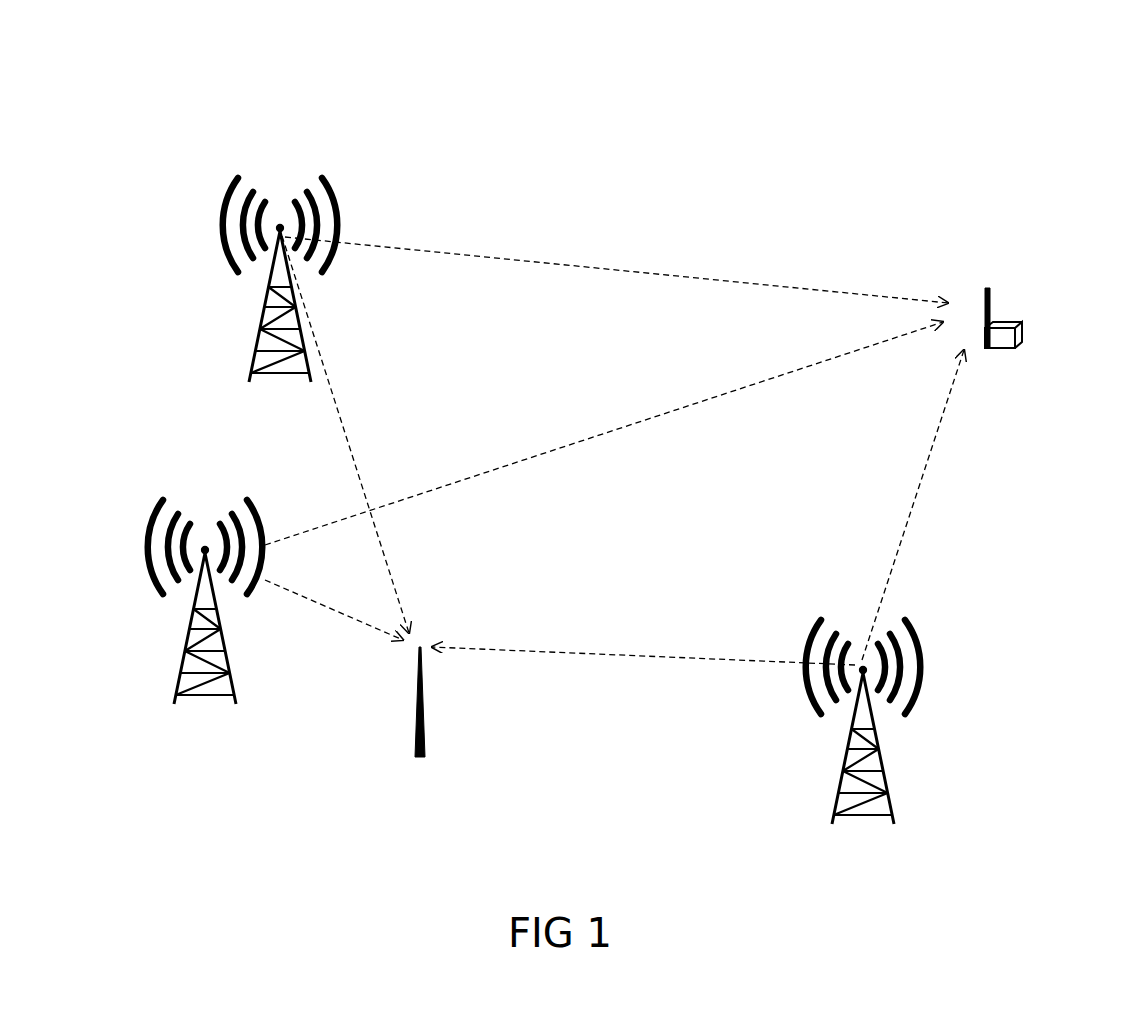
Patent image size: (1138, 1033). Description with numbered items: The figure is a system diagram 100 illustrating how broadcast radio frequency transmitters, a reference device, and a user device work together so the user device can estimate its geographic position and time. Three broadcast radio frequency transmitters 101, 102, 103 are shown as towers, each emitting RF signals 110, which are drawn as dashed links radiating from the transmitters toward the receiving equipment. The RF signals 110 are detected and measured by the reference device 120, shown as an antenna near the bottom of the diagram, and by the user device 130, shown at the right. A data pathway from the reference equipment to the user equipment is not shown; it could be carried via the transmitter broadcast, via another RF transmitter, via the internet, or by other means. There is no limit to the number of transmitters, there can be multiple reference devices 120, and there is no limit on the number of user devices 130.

The system diagram 100 is at (470, 85).
The broadcast radio frequency transmitter 101 is at (256, 366).
The broadcast radio frequency transmitter 102 is at (180, 686).
The broadcast radio frequency transmitter 103 is at (835, 793).
The RF signals 110 is at (340, 396).
The reference device 120 is at (417, 730).
The user device 130 is at (1022, 333).